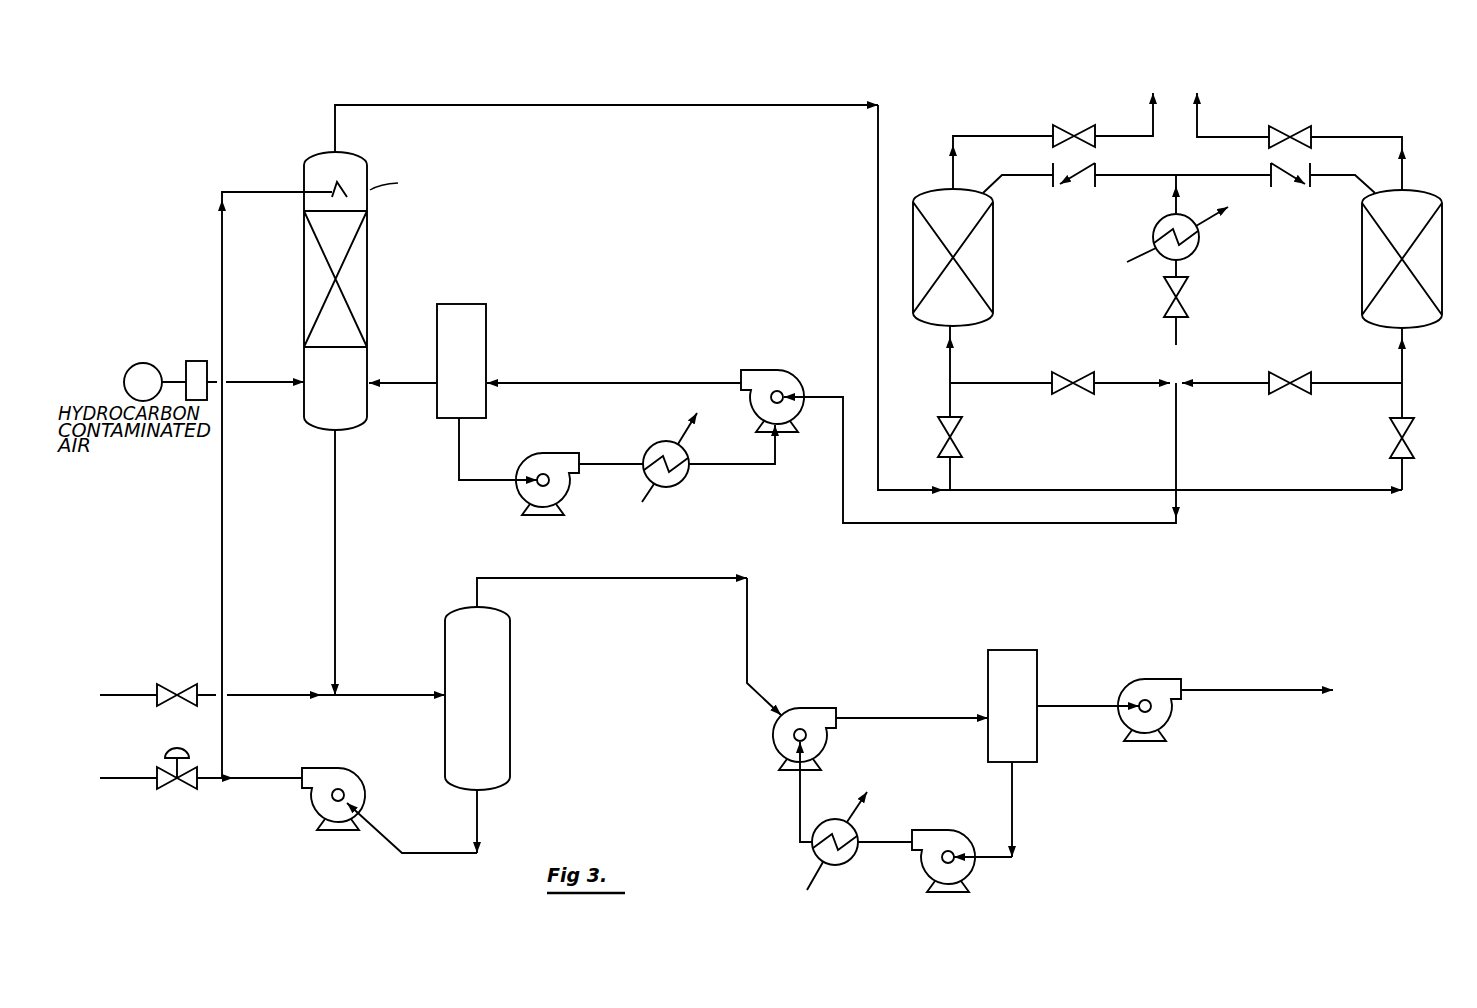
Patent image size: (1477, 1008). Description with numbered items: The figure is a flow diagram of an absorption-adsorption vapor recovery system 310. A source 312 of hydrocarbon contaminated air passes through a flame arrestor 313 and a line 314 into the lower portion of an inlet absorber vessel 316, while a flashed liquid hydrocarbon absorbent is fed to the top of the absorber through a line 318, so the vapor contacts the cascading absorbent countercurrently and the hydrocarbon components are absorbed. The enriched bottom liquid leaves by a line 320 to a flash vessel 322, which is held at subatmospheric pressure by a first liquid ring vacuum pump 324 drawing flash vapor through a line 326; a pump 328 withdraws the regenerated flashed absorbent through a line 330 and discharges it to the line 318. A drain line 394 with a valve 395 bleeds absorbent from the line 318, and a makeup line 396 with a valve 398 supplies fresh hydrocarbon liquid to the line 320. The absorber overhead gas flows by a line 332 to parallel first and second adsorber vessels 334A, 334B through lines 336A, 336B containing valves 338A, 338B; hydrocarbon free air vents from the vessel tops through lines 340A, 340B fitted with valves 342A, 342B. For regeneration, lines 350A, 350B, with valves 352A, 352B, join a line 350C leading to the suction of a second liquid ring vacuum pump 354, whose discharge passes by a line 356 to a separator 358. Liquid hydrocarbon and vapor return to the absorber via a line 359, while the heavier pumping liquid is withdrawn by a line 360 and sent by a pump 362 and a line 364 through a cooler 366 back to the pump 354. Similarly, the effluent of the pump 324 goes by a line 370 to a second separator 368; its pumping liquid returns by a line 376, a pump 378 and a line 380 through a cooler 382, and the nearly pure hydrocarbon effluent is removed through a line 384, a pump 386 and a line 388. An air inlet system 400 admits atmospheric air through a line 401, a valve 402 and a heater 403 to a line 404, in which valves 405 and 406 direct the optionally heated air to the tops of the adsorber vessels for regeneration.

The vapor recovery system 310 is at (535, 52).
The source of hydrocarbon contaminated air 312 is at (148, 362).
The flame arrestor 313 is at (197, 360).
The line 314 is at (245, 380).
The inlet absorber vessel 316 is at (370, 251).
The line 318 is at (221, 271).
The line 320 is at (335, 549).
The flash vessel 322 is at (512, 650).
The first liquid ring vacuum pump 324 is at (805, 708).
The line 326 is at (622, 578).
The pump 328 is at (368, 797).
The line 330 is at (481, 820).
The line 332 is at (704, 103).
The first adsorber vessel 334A is at (1360, 260).
The second adsorber vessel 334B is at (996, 280).
The line 336A is at (1404, 376).
The line 336B is at (945, 372).
The valve 338A is at (1410, 440).
The valve 338B is at (963, 447).
The line 340A is at (1384, 136).
The line 340B is at (953, 130).
The valve 342A is at (1305, 126).
The valve 342B is at (1066, 124).
The line 350A is at (1356, 382).
The line 350B is at (995, 380).
The line 350C is at (1178, 442).
The valve 352A is at (1292, 397).
The valve 352B is at (1078, 372).
The second liquid ring vacuum pump 354 is at (770, 368).
The line 356 is at (583, 380).
The separator 358 is at (487, 322).
The line 359 is at (397, 379).
The line 360 is at (459, 452).
The pump 362 is at (540, 454).
The line 364 is at (588, 477).
The cooler 366 is at (690, 481).
The second separator 368 is at (1020, 650).
The line 370 is at (888, 715).
The line 376 is at (1015, 813).
The pump 378 is at (925, 872).
The line 380 is at (798, 808).
The cooler 382 is at (860, 830).
The line 384 is at (1072, 705).
The pump 386 is at (1173, 718).
The line 388 is at (1222, 690).
The drain line 394 is at (205, 782).
The valve 395 is at (163, 768).
The line 396 is at (258, 694).
The valve 398 is at (180, 683).
The air inlet system 400 is at (1179, 246).
The line 401 is at (1178, 330).
The valve 402 is at (1188, 304).
The heater 403 is at (1200, 241).
The line 404 is at (1145, 175).
The valve 405 is at (1278, 188).
The valve 406 is at (1078, 184).